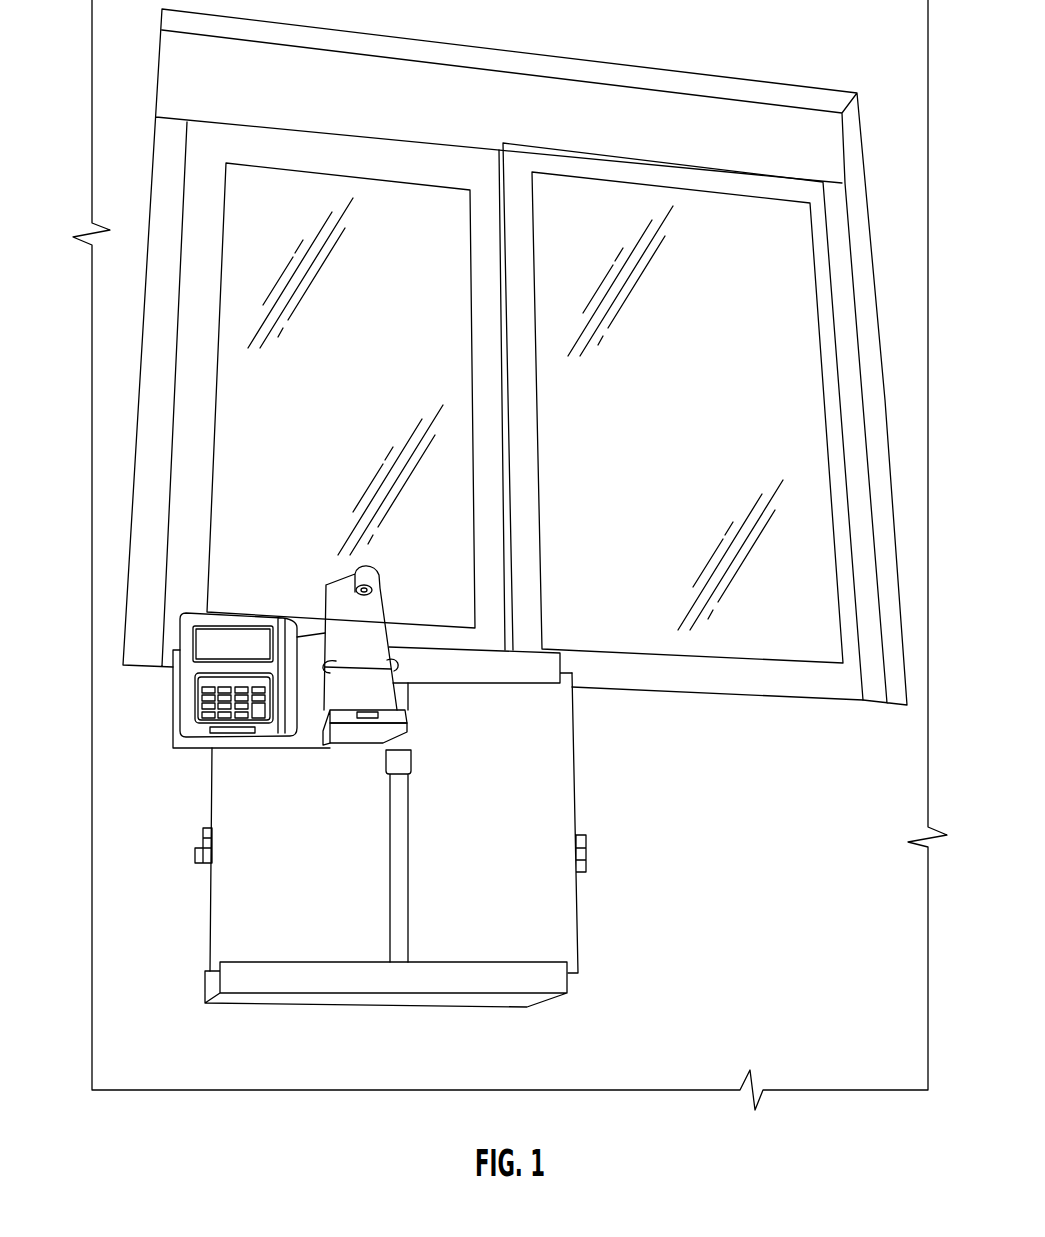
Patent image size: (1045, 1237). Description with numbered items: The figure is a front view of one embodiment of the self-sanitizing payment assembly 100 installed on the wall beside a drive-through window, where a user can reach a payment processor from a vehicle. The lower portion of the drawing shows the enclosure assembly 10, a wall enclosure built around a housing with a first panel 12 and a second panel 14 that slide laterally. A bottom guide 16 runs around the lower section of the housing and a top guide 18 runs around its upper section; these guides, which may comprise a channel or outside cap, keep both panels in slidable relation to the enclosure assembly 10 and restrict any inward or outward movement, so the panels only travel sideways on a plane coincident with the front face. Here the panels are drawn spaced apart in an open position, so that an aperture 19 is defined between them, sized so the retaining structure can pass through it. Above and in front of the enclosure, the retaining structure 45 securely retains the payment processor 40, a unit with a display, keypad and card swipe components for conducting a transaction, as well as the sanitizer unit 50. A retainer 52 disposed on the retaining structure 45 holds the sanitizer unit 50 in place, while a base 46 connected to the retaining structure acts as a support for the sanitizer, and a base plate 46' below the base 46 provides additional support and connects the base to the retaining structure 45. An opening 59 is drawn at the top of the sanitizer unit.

The kiosk system 100 is at (333, 804).
The enclosure assembly 10 is at (371, 854).
The first panel 12 is at (247, 910).
The second panel 14 is at (533, 928).
The bottom guide 16 is at (403, 980).
The top guide 18 is at (510, 665).
The aperture 19 is at (400, 913).
The payment processor 40 is at (272, 735).
The retaining structure 45 is at (312, 645).
The base 46 is at (392, 765).
The base plate 46' is at (368, 771).
The sanitizer unit 50 is at (394, 635).
The retainer 52 is at (445, 703).
The lens opening 59 is at (375, 590).